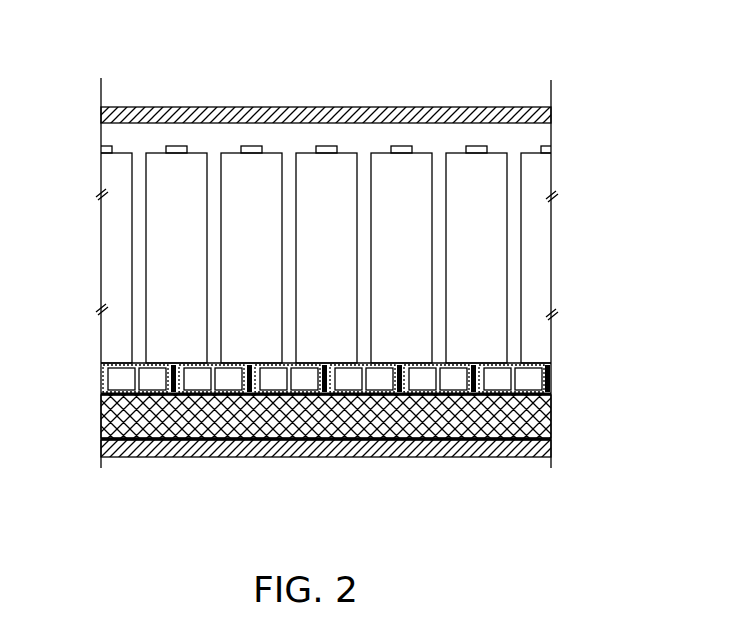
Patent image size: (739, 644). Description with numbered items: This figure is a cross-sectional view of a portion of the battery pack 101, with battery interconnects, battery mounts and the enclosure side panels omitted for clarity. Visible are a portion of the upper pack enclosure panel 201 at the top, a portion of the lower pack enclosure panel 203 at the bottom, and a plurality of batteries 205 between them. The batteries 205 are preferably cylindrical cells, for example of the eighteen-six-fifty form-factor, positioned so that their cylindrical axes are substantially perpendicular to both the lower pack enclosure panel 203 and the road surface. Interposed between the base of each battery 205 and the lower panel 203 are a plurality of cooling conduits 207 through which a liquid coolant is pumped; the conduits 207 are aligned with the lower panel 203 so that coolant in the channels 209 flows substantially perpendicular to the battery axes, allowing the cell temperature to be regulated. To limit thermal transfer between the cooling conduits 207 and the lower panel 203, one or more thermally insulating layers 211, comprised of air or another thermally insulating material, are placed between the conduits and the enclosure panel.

The battery pack 101 is at (543, 58).
The upper pack enclosure panel 201 is at (223, 109).
The lower pack enclosure panel 203 is at (368, 450).
The batteries 205 is at (155, 263).
The cooling conduits 207 is at (205, 365).
The channels 209 is at (420, 380).
The thermally insulating layers 211 is at (100, 423).